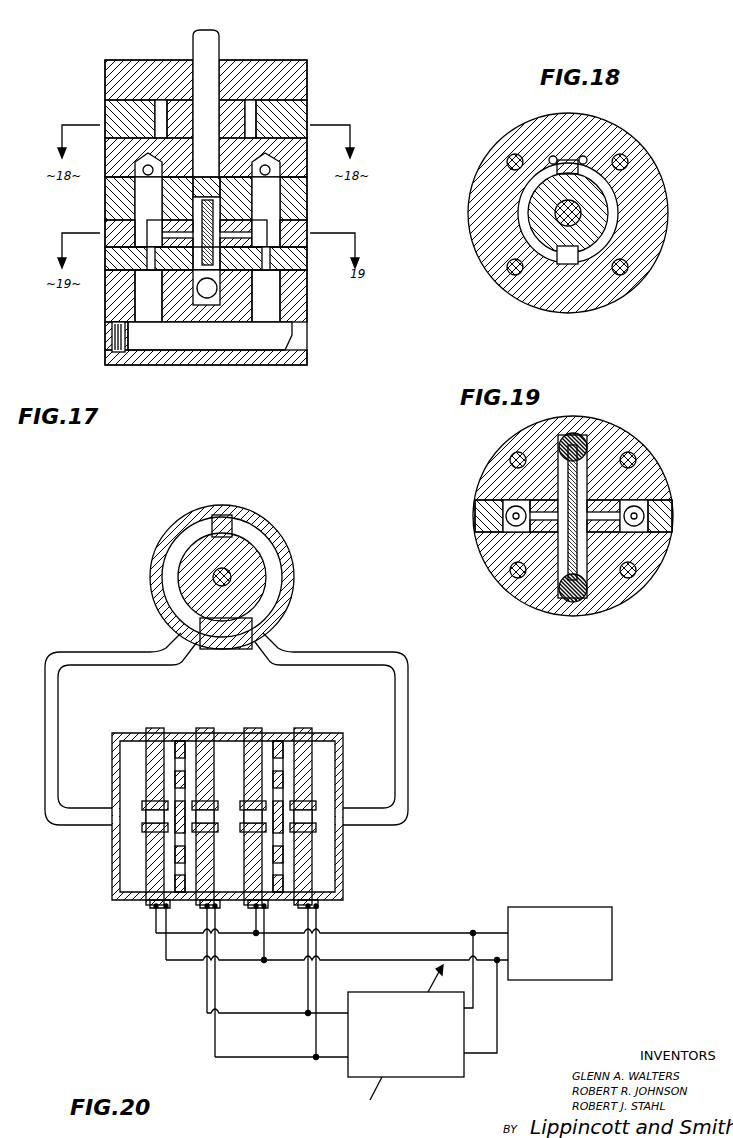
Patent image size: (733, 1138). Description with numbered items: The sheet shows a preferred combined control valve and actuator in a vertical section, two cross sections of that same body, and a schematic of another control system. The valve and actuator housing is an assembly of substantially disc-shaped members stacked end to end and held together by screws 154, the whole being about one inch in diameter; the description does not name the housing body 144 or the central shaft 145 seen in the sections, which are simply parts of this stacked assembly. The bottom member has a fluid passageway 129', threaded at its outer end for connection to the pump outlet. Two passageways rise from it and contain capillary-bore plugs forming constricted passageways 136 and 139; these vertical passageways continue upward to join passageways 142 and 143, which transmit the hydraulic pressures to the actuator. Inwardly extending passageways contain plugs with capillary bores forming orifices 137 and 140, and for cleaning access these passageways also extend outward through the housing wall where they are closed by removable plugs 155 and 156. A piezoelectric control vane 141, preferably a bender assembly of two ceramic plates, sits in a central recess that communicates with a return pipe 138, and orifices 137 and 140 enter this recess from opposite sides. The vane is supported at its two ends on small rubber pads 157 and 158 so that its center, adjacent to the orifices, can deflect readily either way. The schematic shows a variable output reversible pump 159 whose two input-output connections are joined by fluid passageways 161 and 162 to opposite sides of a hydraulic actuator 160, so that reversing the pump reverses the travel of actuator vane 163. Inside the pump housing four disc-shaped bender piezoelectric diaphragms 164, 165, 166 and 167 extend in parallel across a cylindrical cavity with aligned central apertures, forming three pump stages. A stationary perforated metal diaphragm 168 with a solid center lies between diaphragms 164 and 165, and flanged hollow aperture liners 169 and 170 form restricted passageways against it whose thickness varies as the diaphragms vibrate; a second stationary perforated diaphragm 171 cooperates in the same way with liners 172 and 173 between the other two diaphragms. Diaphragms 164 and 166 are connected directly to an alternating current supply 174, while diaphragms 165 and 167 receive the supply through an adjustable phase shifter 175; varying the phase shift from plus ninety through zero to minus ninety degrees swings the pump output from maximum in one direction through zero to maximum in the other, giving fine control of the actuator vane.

In FIG. 17, the fluid passageway 129' is at (99, 337).
In FIG. 17, the constricted passageway 136 is at (280, 272).
In FIG. 19, the constricted passageway 136 is at (640, 500).
In FIG. 17, the orifice 137 is at (258, 222).
In FIG. 19, the orifice 137 is at (612, 528).
In FIG. 17, the return pipe 138 is at (207, 295).
In FIG. 17, the constricted passageway 139 is at (138, 270).
In FIG. 19, the constricted passageway 139 is at (510, 500).
In FIG. 17, the orifice 140 is at (162, 218).
In FIG. 19, the orifice 140 is at (540, 530).
In FIG. 17, the piezoelectric control vane 141 is at (213, 260).
In FIG. 19, the piezoelectric control vane 141 is at (576, 492).
In FIG. 17, the passageway 142 is at (270, 172).
In FIG. 18, the passageway 142 is at (587, 158).
In FIG. 17, the passageway 143 is at (143, 172).
In FIG. 18, the passageway 143 is at (551, 156).
In FIG. 17, the housing body 144 is at (238, 100).
In FIG. 18, the housing body 144 is at (585, 262).
In FIG. 17, the shaft 145 is at (219, 38).
In FIG. 18, the shaft 145 is at (575, 212).
In FIG. 18, the screws 154 is at (626, 166).
In FIG. 19, the screws 154 is at (632, 455).
In FIG. 17, the removable plug 155 is at (112, 228).
In FIG. 19, the removable plug 155 is at (485, 520).
In FIG. 17, the removable plug 156 is at (283, 242).
In FIG. 19, the removable plug 156 is at (615, 504).
In FIG. 19, the rubber pad 157 is at (578, 440).
In FIG. 19, the rubber pad 158 is at (587, 600).
In FIG. 20, the variable output reversible pump 159 is at (320, 733).
In FIG. 20, the hydraulic motor or actuator 160 is at (288, 568).
In FIG. 20, the fluid passageway 161 is at (58, 730).
In FIG. 20, the fluid passageway 162 is at (408, 718).
In FIG. 20, the actuator vane 163 is at (232, 520).
In FIG. 20, the piezoelectric diaphragm 164 is at (155, 728).
In FIG. 20, the piezoelectric diaphragm 165 is at (205, 728).
In FIG. 20, the piezoelectric diaphragm 166 is at (253, 728).
In FIG. 20, the piezoelectric diaphragm 167 is at (303, 728).
In FIG. 20, the stationary perforated metal diaphragm 168 is at (178, 830).
In FIG. 20, the aperture liner 169 is at (150, 818).
In FIG. 20, the aperture liner 170 is at (215, 815).
In FIG. 20, the stationary perforated diaphragm 171 is at (278, 835).
In FIG. 20, the aperture liner 172 is at (245, 812).
In FIG. 20, the aperture liner 173 is at (316, 815).
In FIG. 20, the alternating current supply 174 is at (568, 907).
In FIG. 20, the adjustable phase shifter 175 is at (395, 992).